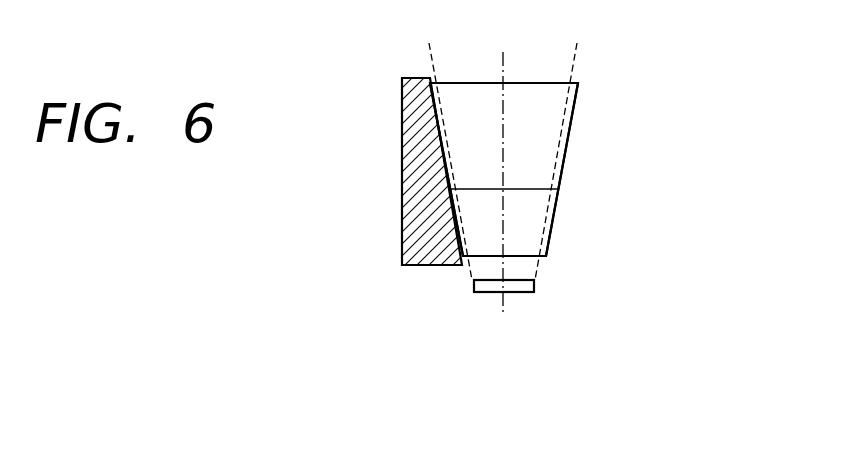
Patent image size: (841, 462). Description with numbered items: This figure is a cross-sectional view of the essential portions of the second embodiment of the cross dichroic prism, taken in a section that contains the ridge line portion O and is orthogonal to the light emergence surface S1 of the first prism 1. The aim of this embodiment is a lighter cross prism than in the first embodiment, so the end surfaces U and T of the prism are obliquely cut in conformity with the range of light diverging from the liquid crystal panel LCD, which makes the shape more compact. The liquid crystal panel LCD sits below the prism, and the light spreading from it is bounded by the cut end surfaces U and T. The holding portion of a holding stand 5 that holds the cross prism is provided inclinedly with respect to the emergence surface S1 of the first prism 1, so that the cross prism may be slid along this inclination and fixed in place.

The first prism 1 is at (467, 90).
The light emergence surface S1 is at (545, 83).
The holding stand 5 is at (407, 105).
The end surface T is at (438, 160).
The end surface U is at (560, 163).
The ridge line portion O is at (520, 190).
The liquid crystal panel LCD is at (522, 292).